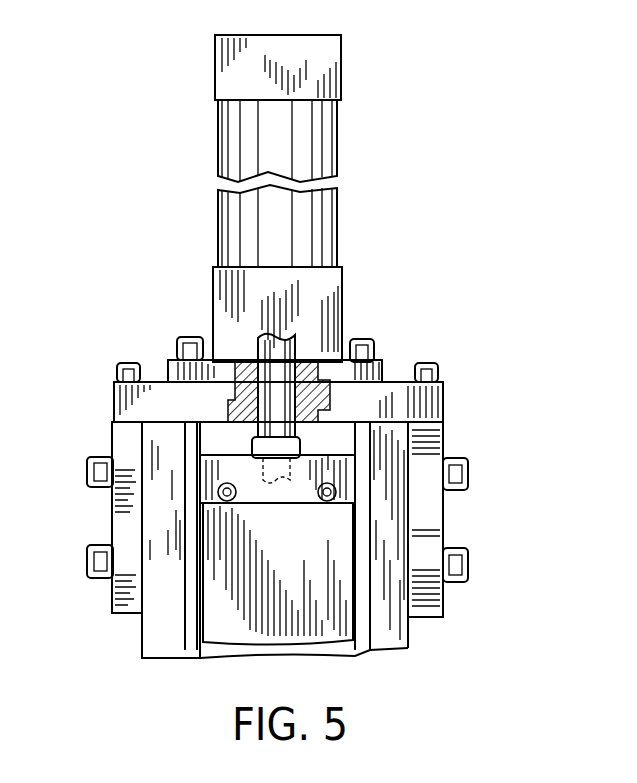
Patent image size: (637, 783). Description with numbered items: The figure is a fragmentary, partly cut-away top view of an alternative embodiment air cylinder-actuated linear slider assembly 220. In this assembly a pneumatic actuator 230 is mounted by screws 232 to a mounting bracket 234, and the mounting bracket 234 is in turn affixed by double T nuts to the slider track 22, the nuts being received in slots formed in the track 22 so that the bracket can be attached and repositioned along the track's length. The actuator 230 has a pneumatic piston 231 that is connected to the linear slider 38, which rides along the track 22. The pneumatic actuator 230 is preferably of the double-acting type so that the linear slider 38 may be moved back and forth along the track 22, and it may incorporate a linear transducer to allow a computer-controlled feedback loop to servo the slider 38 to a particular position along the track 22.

The pneumatic actuator 230 is at (337, 217).
The air cylinder-actuated linear slider assembly 220 is at (453, 313).
The screws 232 is at (357, 340).
The mounting bracket 234 is at (443, 438).
The pneumatic piston 231 is at (300, 438).
The slider track 22 is at (410, 638).
The linear slider 38 is at (203, 602).